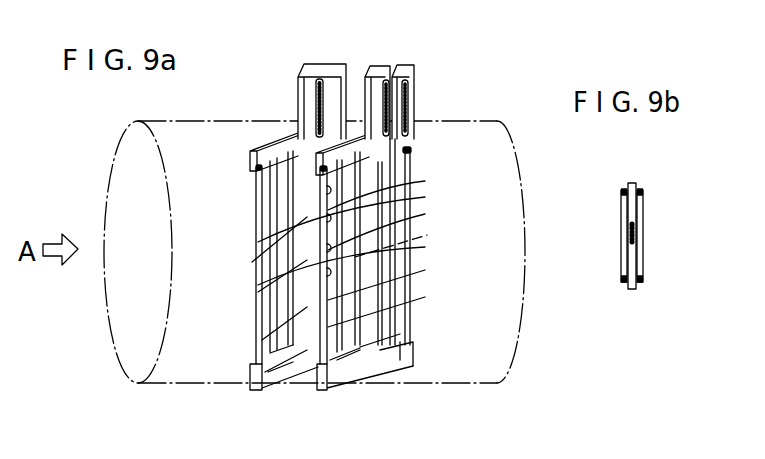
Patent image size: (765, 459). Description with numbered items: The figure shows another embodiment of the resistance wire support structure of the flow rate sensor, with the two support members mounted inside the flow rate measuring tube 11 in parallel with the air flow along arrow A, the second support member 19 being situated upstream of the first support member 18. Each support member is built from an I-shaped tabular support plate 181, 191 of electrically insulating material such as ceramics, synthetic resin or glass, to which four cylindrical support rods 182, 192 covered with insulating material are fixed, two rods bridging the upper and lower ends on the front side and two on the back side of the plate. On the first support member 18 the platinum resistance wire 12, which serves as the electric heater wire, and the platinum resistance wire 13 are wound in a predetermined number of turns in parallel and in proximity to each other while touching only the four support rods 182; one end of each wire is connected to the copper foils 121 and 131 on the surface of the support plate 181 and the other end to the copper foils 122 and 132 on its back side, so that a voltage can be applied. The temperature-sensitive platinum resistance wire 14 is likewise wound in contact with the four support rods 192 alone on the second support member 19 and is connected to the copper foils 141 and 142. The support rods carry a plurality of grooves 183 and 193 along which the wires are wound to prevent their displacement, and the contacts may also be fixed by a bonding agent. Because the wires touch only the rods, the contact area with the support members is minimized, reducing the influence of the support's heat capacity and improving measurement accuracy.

In FIG. 9a, the flow rate measuring tube 11 is at (443, 121).
In FIG. 9a, the platinum resistance wire 12 is at (372, 360).
In FIG. 9b, the platinum resistance wire 12 is at (645, 207).
In FIG. 9a, the platinum resistance wire 13 is at (350, 370).
In FIG. 9b, the platinum resistance wire 13 is at (670, 236).
In FIG. 9a, the platinum resistance wire 14 is at (273, 182).
In FIG. 9a, the first support member 18 is at (328, 383).
In FIG. 9b, the first support member 18 is at (621, 258).
In FIG. 9a, the second support member 19 is at (255, 395).
In FIG. 9a, the copper foil 121 is at (415, 72).
In FIG. 9a, the copper foil 122 is at (407, 65).
In FIG. 9a, the copper foil 131 is at (387, 67).
In FIG. 9a, the copper foil 132 is at (378, 67).
In FIG. 9a, the copper foil 141 is at (320, 67).
In FIG. 9a, the copper foil 142 is at (312, 67).
In FIG. 9a, the support plate 181 is at (400, 366).
In FIG. 9b, the support plate 181 is at (636, 230).
In FIG. 9a, the support rods 182 is at (410, 195).
In FIG. 9b, the support rods 182 is at (622, 190).
In FIG. 9a, the grooves 183 is at (408, 205).
In FIG. 9a, the support plate 191 is at (287, 374).
In FIG. 9a, the support rods 192 is at (258, 316).
In FIG. 9a, the grooves 193 is at (256, 262).